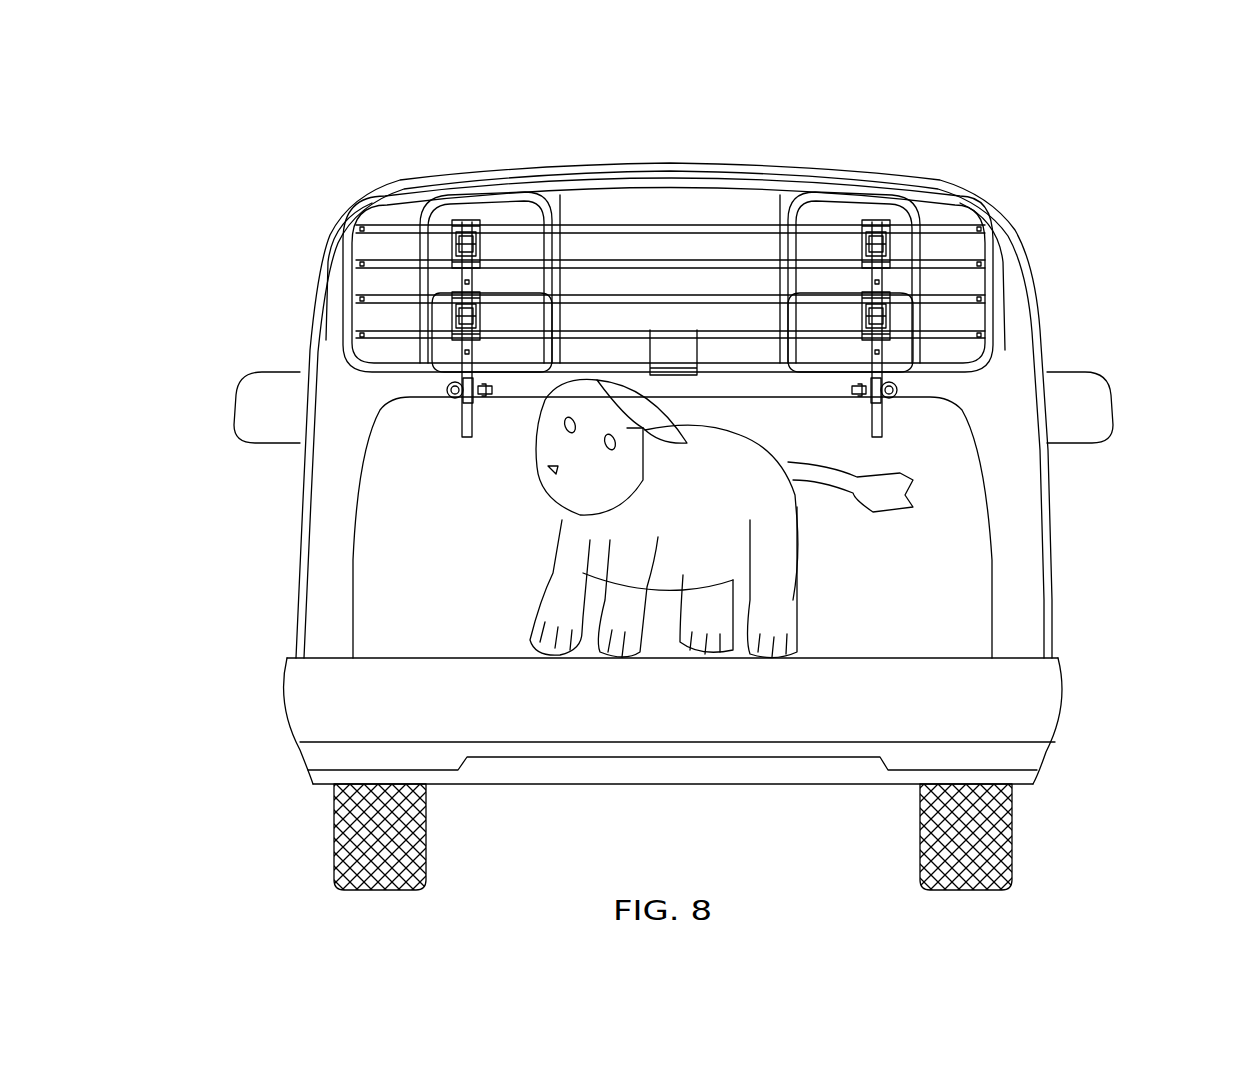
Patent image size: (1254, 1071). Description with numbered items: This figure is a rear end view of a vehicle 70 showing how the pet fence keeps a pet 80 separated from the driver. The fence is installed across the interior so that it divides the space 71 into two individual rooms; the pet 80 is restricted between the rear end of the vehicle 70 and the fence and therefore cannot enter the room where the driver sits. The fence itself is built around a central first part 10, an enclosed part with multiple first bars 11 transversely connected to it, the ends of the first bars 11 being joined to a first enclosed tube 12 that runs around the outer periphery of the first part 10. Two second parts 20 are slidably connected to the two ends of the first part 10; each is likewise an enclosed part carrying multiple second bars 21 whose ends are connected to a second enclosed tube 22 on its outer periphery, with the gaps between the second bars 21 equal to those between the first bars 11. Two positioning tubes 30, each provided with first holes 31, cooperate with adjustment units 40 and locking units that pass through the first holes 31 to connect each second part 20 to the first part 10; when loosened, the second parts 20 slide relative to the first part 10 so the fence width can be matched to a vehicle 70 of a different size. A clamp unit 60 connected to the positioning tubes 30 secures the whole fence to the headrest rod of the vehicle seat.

The first part 10 is at (744, 279).
The first bars 11 is at (587, 228).
The first enclosed tube 12 is at (562, 187).
The second parts 20 is at (747, 275).
The second bars 21 is at (945, 228).
The second enclosed tube 22 is at (807, 195).
The positioning tubes 30 is at (468, 427).
The first holes 31 is at (910, 350).
The adjustment units 40 is at (447, 240).
The clamp unit 60 is at (442, 410).
The vehicle 70 is at (1040, 718).
The space 71 is at (1032, 525).
The pet 80 is at (785, 537).